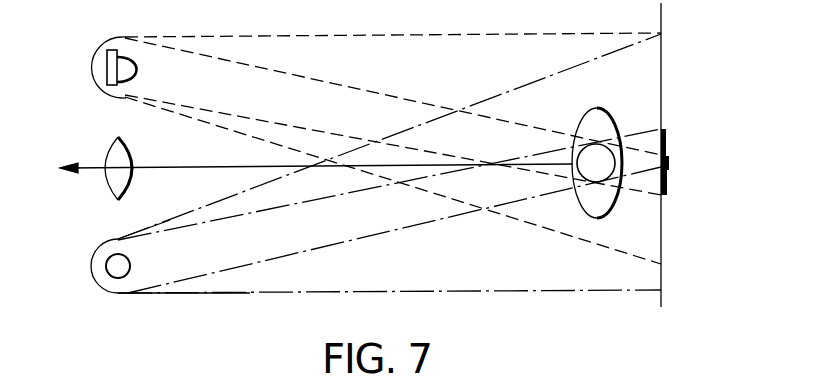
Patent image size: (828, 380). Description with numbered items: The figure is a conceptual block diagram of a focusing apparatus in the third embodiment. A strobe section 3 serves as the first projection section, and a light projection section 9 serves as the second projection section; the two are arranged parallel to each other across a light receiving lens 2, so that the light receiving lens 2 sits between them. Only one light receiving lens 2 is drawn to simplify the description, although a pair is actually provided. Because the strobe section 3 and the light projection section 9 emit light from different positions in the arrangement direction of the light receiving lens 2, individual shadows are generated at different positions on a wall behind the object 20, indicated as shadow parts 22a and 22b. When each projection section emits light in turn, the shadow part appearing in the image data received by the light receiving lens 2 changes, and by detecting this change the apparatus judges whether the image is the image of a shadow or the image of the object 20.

The light projection section 9 is at (90, 66).
The light receiving lens 2 is at (106, 156).
The strobe section 3 is at (90, 266).
The object 20 is at (599, 107).
The shadow part 22b is at (666, 146).
The shadow part 22a is at (668, 180).